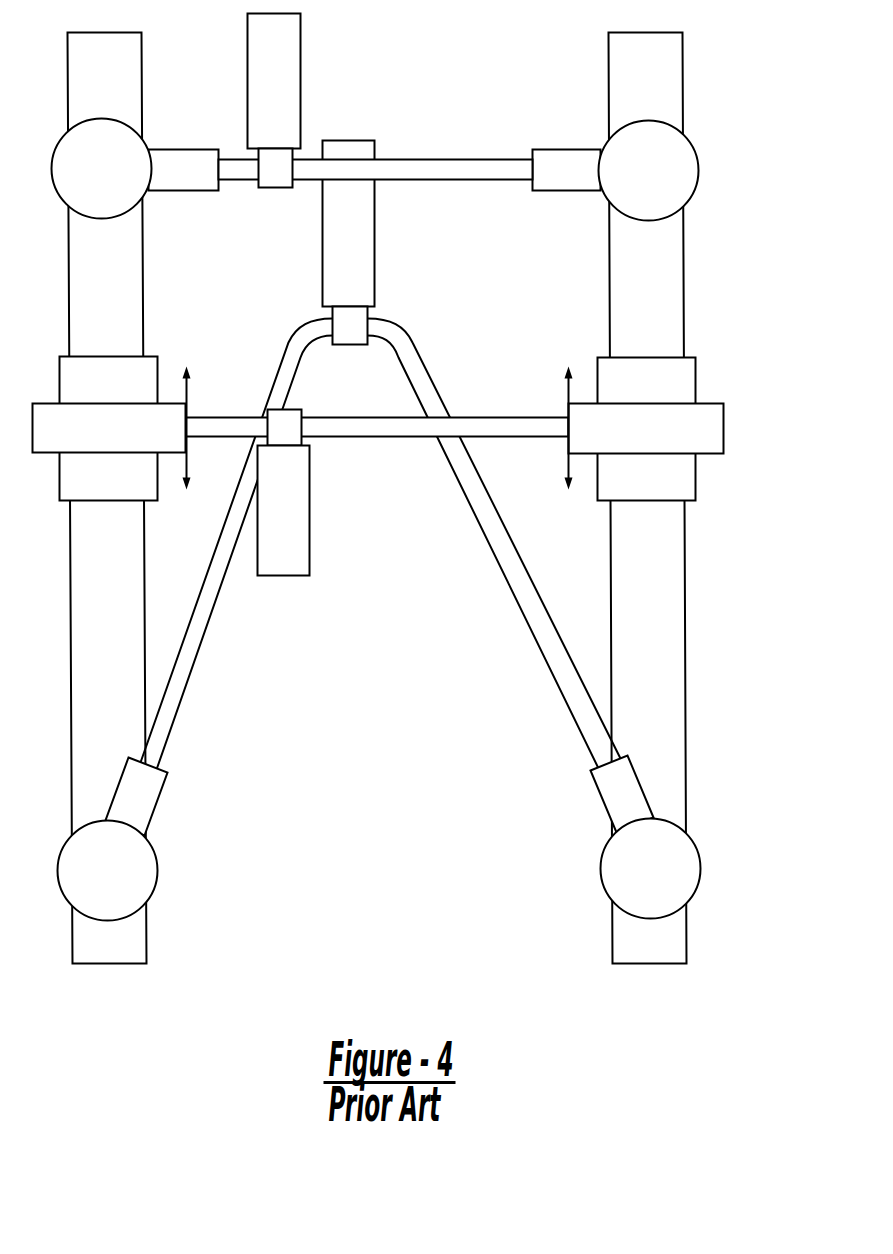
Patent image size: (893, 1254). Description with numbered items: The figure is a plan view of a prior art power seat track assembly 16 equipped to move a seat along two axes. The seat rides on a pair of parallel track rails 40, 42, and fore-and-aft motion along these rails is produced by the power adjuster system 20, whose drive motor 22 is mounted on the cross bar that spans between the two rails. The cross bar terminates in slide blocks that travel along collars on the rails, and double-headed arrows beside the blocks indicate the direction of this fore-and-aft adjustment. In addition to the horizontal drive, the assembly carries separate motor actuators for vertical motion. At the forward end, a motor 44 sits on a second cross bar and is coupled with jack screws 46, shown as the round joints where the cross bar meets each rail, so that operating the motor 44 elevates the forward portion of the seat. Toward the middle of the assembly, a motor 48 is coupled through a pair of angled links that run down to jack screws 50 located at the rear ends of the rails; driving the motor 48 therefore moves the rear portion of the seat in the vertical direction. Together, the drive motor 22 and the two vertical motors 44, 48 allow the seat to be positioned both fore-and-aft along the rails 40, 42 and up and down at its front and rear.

The tiltrotor / tilt actuation system (prior art) 16 is at (716, 254).
The power adjuster system 20 is at (349, 440).
The drive motor 22 is at (288, 542).
The track rail 40 is at (146, 935).
The track rail 42 is at (662, 607).
The motor 44 is at (300, 58).
The jack screws 46 is at (138, 146).
The motor 48 is at (375, 255).
The jack screws 50 is at (158, 867).